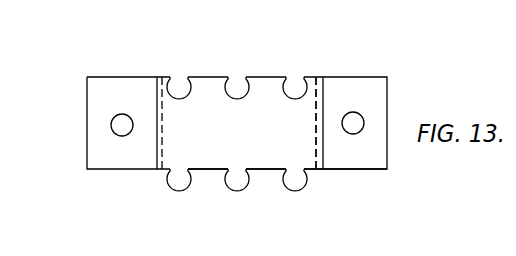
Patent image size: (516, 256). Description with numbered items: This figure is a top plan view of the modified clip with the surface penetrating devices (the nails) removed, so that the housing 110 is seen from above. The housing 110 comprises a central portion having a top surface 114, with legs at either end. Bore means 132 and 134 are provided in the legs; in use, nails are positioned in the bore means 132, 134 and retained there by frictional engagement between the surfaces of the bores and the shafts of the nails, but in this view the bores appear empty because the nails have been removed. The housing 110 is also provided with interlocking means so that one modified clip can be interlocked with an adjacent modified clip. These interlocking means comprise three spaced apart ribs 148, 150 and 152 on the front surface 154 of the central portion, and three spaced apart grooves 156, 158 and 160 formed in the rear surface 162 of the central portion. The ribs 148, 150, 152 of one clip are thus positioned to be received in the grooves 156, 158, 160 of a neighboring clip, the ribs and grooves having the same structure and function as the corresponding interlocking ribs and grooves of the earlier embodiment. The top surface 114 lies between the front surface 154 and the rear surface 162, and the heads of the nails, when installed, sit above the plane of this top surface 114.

The housing 110 is at (435, 70).
The top surface 114 is at (238, 212).
The bore means 132 is at (118, 128).
The bore means 134 is at (353, 122).
The rib 148 is at (176, 189).
The rib 150 is at (238, 190).
The rib 152 is at (297, 190).
The front surface 154 is at (308, 170).
The groove 156 is at (178, 77).
The groove 158 is at (239, 77).
The groove 160 is at (294, 77).
The rear surface 162 is at (312, 77).